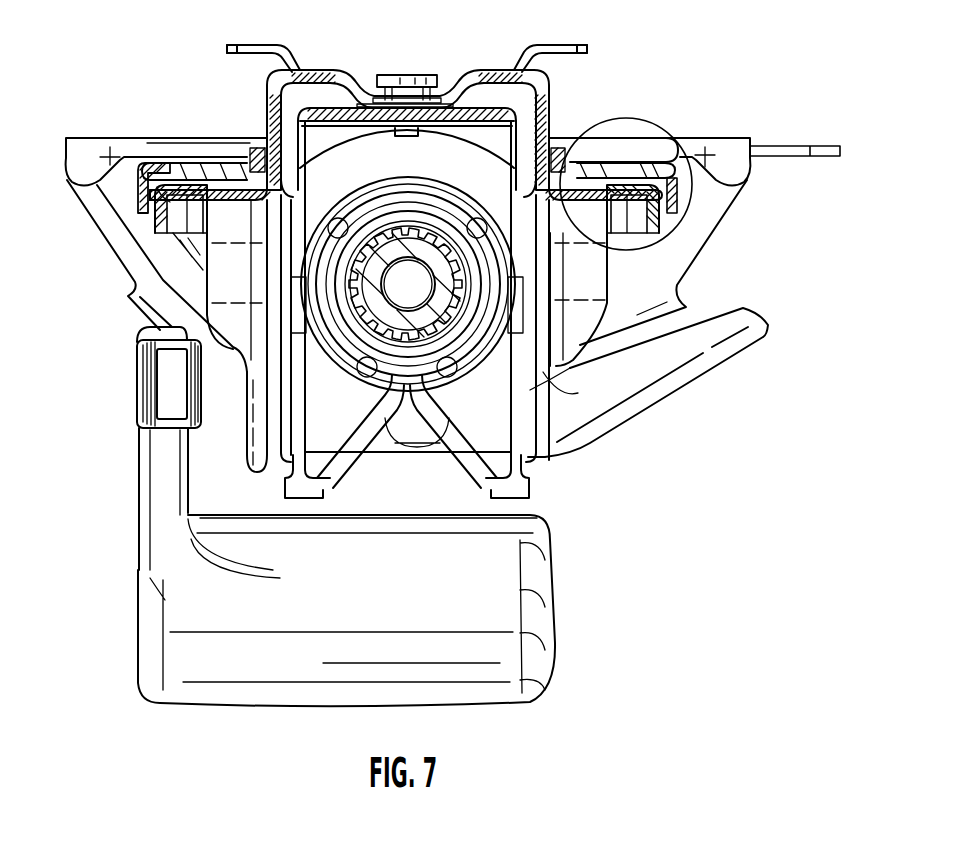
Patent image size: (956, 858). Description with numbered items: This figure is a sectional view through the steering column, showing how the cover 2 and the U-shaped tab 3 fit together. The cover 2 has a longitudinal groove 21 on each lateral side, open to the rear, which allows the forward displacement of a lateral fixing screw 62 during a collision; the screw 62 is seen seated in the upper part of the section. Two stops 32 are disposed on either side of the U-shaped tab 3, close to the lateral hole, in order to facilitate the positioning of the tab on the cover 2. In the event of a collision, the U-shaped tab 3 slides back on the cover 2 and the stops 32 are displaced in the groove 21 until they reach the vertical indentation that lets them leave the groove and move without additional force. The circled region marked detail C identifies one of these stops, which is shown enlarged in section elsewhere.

The cover 2 is at (118, 147).
The longitudinal groove 21 is at (203, 168).
The stop 32 is at (173, 183).
The U-shaped tab 3 is at (153, 227).
The lateral fixing screw 62 is at (402, 84).
The detail C is at (665, 124).